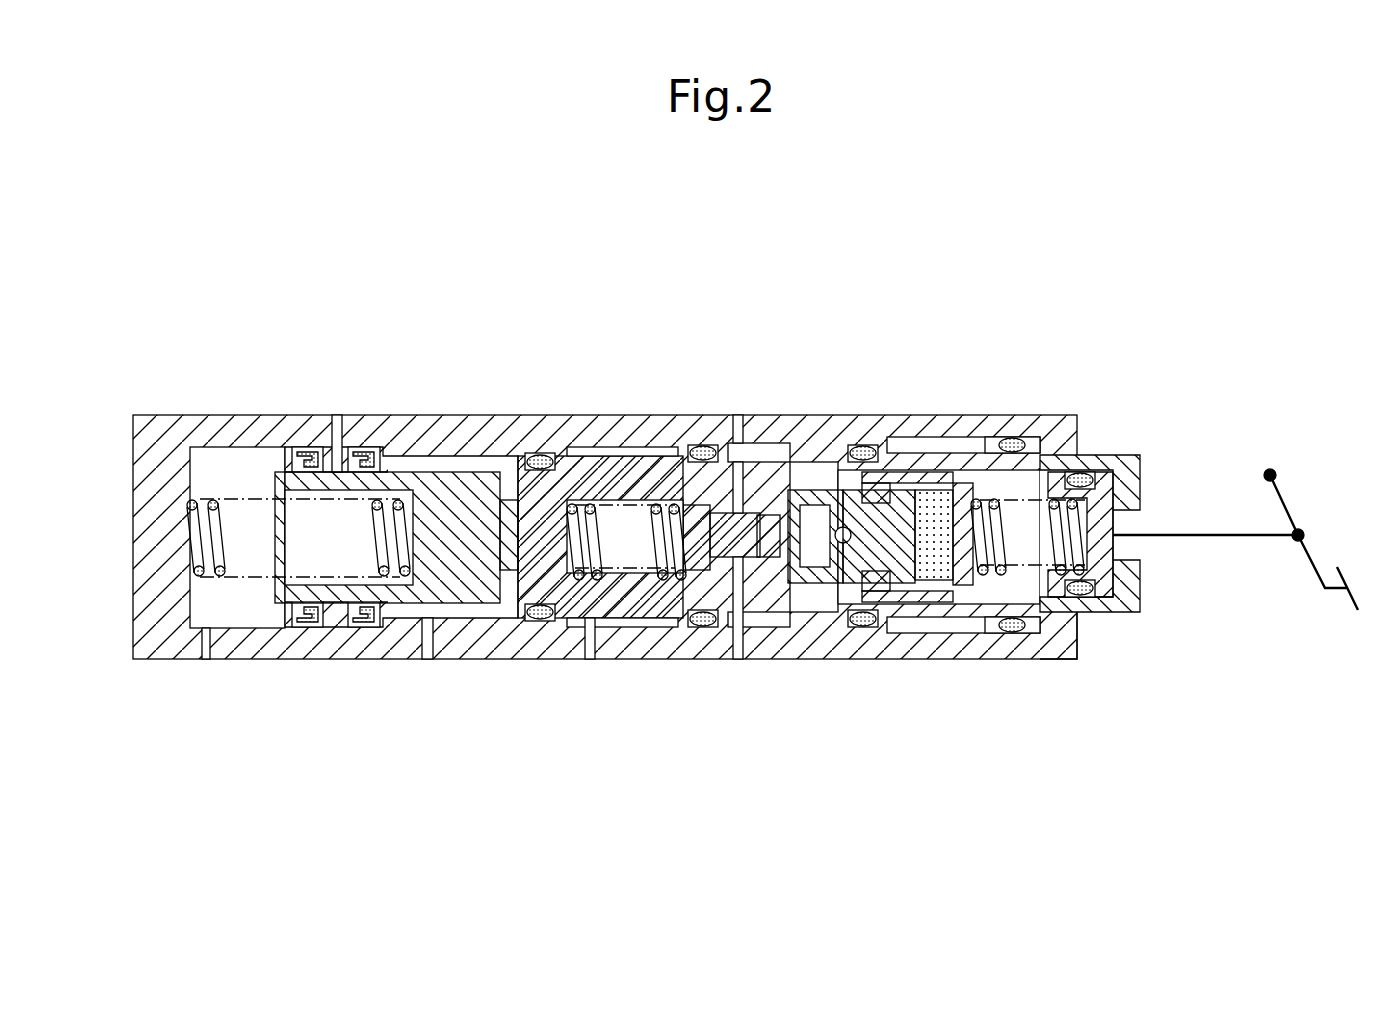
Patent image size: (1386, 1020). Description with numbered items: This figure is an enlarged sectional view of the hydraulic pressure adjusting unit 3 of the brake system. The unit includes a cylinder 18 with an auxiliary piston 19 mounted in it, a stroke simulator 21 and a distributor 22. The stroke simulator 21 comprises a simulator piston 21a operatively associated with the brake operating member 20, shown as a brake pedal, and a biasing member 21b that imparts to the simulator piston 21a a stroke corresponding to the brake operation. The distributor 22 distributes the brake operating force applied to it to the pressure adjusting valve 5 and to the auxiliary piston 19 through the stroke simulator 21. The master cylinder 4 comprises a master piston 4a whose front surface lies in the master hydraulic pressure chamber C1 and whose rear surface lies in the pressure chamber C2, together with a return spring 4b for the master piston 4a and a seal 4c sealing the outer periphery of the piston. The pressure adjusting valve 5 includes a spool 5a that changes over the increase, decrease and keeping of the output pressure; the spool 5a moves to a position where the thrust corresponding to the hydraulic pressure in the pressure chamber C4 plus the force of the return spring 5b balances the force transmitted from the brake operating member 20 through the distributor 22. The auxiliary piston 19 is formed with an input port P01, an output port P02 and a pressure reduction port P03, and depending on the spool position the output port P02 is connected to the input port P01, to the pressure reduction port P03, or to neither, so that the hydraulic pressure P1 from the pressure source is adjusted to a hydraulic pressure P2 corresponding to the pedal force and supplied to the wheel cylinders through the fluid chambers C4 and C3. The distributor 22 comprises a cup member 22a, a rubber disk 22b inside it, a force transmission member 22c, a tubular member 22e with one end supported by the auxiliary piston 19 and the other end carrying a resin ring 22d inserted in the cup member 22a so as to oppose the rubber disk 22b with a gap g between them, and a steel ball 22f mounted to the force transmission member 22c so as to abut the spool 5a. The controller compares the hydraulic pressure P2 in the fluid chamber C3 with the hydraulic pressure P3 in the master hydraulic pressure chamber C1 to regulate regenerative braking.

The hydraulic pressure adjusting unit 3 is at (1058, 415).
The master cylinder 4 is at (294, 413).
The master piston 4a is at (450, 578).
The return spring 4b is at (218, 543).
The seal 4c is at (308, 448).
The pressure adjusting valve 5 is at (764, 505).
The spool 5a is at (758, 560).
The return spring 5b is at (593, 566).
The cylinder 18 is at (1082, 628).
The auxiliary piston 19 is at (1132, 588).
The brake operating member 20 is at (1340, 568).
The stroke simulator 21 is at (1120, 540).
The simulator piston 21a is at (1100, 492).
The biasing member 21b is at (1063, 527).
The distributor 22 is at (945, 575).
The cup member 22a is at (1000, 627).
The rubber disk 22b is at (985, 590).
The force transmission member 22c is at (907, 588).
The resin ring 22d is at (900, 500).
The tubular member 22e is at (842, 492).
The steel ball 22f is at (845, 560).
The gap g is at (958, 488).
The master hydraulic pressure chamber C1 is at (230, 478).
The pressure chamber C2 is at (423, 460).
The fluid chamber C3 is at (580, 450).
The pressure chamber C4 is at (626, 516).
The input port P01 is at (696, 446).
The output port P02 is at (668, 622).
The pressure reduction port P03 is at (784, 572).
The hydraulic pressure P1 is at (737, 413).
The hydraulic pressure P2 is at (590, 662).
The hydraulic pressure P3 is at (206, 664).